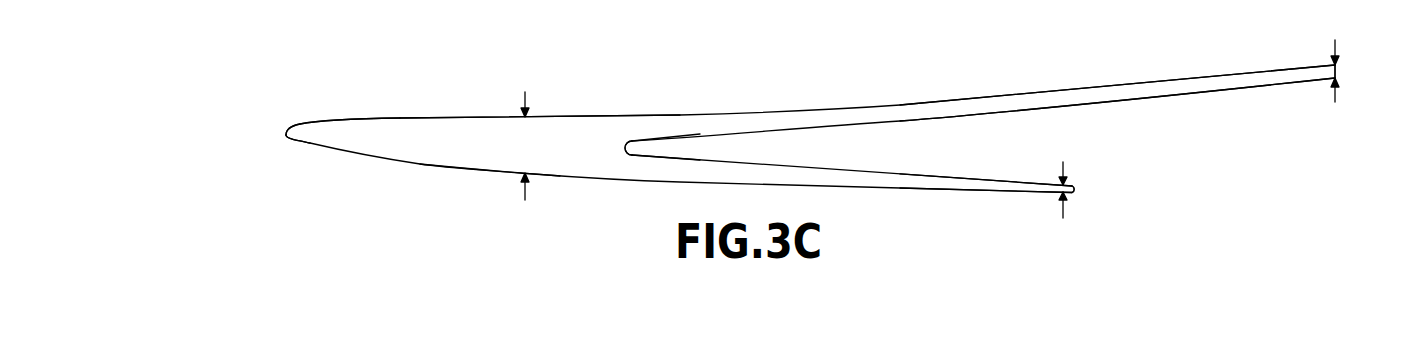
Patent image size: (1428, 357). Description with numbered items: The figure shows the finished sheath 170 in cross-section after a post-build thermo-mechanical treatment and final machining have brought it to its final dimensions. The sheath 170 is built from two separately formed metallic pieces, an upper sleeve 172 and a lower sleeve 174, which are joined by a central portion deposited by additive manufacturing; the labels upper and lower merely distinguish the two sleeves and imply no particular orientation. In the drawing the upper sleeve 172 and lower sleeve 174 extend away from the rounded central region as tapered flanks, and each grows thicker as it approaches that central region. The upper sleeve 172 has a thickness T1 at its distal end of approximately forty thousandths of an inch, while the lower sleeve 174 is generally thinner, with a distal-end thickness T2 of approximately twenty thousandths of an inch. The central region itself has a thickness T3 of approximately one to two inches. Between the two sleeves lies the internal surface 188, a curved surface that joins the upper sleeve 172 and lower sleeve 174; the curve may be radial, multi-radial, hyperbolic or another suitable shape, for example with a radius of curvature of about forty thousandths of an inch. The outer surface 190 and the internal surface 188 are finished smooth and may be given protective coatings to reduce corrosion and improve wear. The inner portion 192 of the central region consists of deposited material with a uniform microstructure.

The sheath 170 is at (285, 113).
The upper sleeve 172 is at (963, 104).
The lower sleeve 174 is at (918, 178).
The internal surface 188 is at (629, 143).
The outer surface 190 is at (372, 117).
The inner portion 192 is at (554, 130).
The thickness of upper sleeve T1 is at (1330, 60).
The thickness of lower sleeve T2 is at (1061, 179).
The thickness of central portion T3 is at (520, 134).